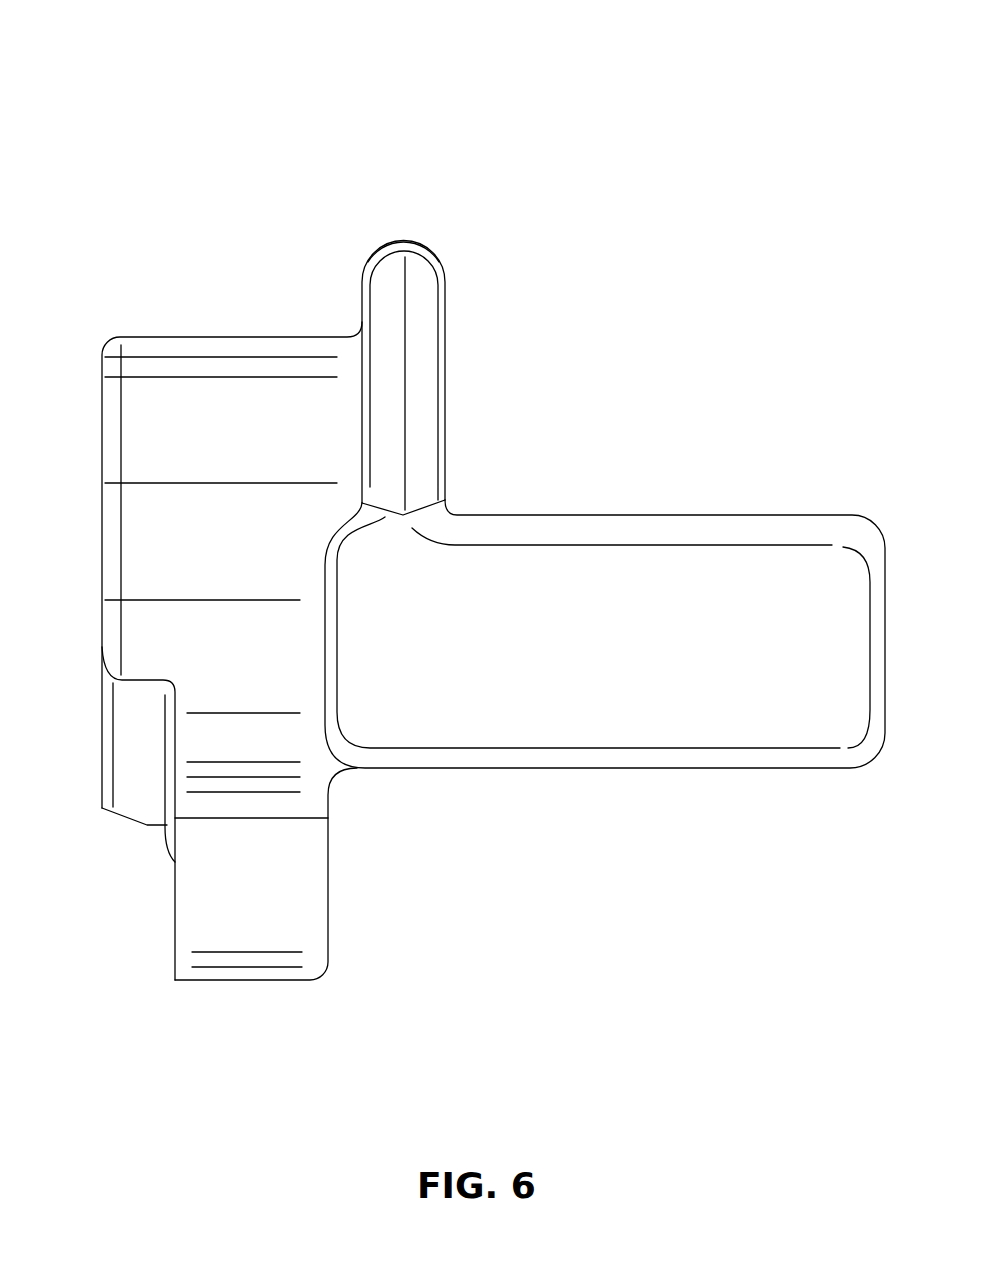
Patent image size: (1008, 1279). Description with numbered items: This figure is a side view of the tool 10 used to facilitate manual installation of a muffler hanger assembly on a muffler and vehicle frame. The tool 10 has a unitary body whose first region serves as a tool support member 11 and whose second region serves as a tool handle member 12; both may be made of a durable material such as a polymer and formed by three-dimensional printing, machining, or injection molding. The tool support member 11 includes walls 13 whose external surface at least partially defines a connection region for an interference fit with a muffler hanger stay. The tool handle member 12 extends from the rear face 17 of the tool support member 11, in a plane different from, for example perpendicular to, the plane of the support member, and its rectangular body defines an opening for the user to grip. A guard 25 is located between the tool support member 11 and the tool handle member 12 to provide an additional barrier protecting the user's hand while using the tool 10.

The tool 10 is at (113, 165).
The tool support member 11 is at (243, 402).
The tool handle member 12 is at (673, 718).
The walls 13 is at (229, 558).
The rear face 17 is at (427, 437).
The guard 25 is at (403, 248).